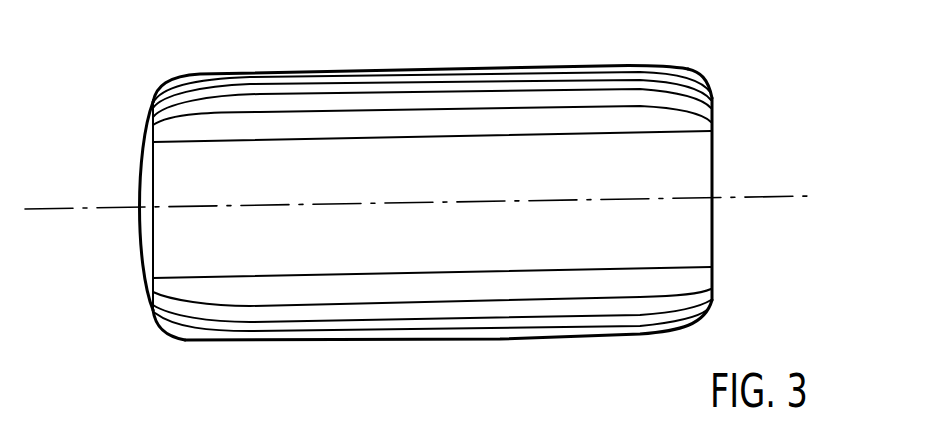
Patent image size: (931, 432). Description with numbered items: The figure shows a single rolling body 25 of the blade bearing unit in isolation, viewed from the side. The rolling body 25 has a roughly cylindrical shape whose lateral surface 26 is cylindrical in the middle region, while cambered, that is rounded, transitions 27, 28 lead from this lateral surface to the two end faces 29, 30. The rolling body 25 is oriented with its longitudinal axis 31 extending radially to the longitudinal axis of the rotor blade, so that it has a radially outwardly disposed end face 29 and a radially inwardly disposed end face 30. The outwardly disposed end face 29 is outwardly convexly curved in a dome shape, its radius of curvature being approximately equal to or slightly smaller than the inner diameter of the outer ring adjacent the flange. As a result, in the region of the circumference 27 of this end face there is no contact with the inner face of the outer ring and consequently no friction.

The rolling body 25 is at (405, 70).
The lateral surface 26 is at (442, 340).
The cambered transition 27 is at (163, 331).
The cambered transition 28 is at (697, 78).
The radially outwardly disposed end face 29 is at (138, 181).
The radially inwardly disposed end face 30 is at (713, 172).
The longitudinal axis 31 is at (783, 202).